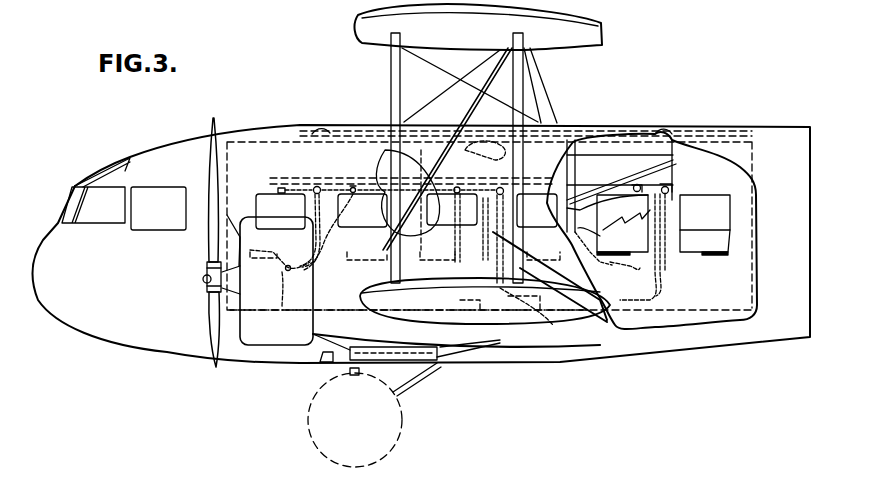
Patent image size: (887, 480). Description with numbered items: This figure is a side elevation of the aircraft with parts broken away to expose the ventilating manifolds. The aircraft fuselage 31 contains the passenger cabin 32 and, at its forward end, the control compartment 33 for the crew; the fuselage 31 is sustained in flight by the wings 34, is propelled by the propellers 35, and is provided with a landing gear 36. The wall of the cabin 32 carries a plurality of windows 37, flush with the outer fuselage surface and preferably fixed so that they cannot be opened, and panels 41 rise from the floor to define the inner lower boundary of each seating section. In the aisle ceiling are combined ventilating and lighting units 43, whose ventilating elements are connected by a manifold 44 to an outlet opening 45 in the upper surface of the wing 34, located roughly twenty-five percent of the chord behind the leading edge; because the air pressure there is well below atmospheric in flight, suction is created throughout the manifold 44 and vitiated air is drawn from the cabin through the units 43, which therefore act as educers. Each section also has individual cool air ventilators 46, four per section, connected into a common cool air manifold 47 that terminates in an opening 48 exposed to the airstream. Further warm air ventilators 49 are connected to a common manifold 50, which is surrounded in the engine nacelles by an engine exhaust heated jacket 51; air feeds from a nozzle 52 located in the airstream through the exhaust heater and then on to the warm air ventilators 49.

The aircraft fuselage 31 is at (262, 125).
The passenger cabin 32 is at (258, 140).
The control compartment 33 is at (166, 274).
The wings 34 is at (605, 36).
The propellers 35 is at (218, 368).
The landing gear 36 is at (312, 411).
The windows 37 is at (705, 225).
The panels 41 is at (652, 230).
The combined ventilating and lighting units 43 is at (330, 129).
The manifold 44 is at (327, 143).
The outlet opening 45 is at (385, 318).
The cool air ventilators 46 is at (275, 188).
The cool air manifold 47 is at (548, 158).
The opening 48 is at (385, 126).
The warm air ventilators 49 is at (313, 186).
The warm air manifold 50 is at (662, 285).
The engine exhaust heated jacket 51 is at (470, 322).
The nozzle 52 is at (300, 368).